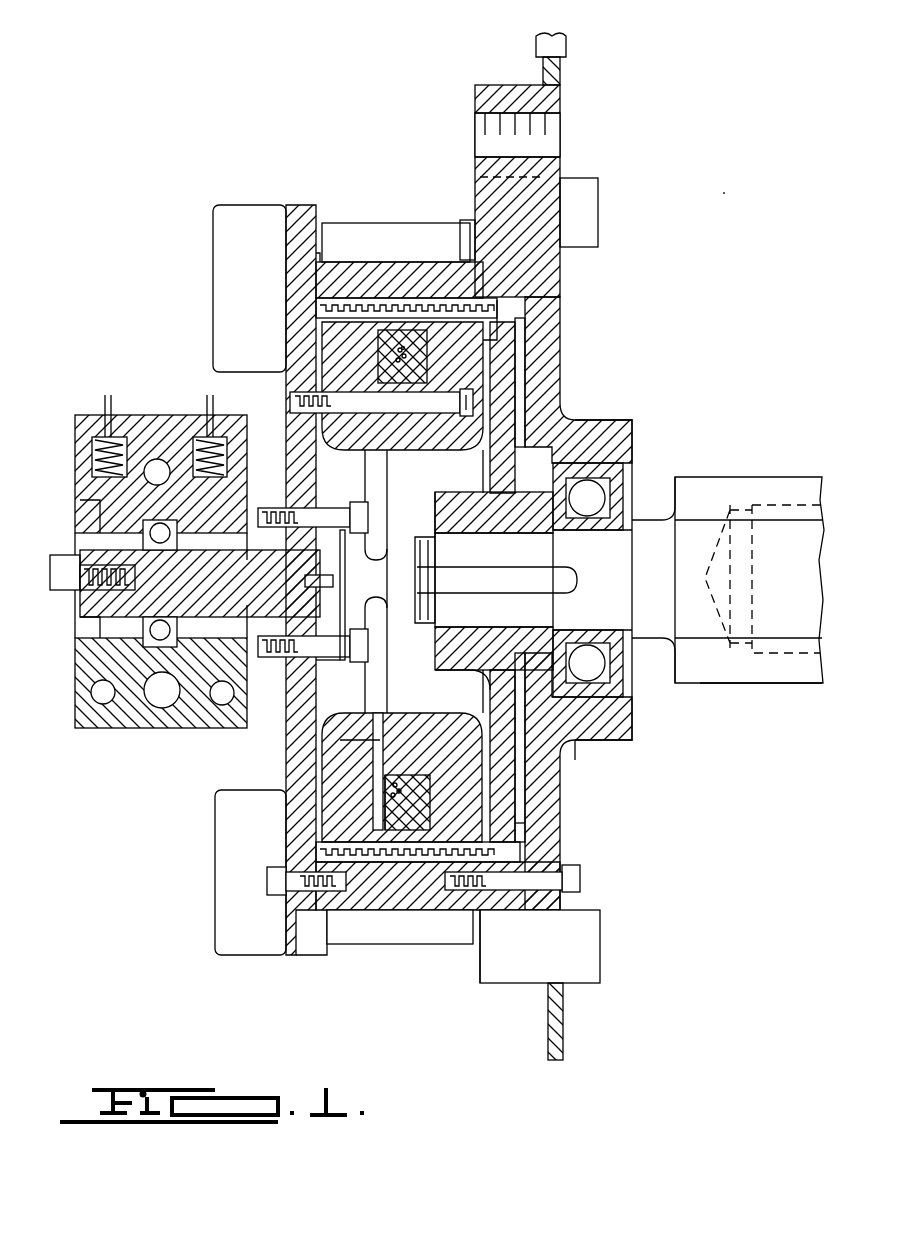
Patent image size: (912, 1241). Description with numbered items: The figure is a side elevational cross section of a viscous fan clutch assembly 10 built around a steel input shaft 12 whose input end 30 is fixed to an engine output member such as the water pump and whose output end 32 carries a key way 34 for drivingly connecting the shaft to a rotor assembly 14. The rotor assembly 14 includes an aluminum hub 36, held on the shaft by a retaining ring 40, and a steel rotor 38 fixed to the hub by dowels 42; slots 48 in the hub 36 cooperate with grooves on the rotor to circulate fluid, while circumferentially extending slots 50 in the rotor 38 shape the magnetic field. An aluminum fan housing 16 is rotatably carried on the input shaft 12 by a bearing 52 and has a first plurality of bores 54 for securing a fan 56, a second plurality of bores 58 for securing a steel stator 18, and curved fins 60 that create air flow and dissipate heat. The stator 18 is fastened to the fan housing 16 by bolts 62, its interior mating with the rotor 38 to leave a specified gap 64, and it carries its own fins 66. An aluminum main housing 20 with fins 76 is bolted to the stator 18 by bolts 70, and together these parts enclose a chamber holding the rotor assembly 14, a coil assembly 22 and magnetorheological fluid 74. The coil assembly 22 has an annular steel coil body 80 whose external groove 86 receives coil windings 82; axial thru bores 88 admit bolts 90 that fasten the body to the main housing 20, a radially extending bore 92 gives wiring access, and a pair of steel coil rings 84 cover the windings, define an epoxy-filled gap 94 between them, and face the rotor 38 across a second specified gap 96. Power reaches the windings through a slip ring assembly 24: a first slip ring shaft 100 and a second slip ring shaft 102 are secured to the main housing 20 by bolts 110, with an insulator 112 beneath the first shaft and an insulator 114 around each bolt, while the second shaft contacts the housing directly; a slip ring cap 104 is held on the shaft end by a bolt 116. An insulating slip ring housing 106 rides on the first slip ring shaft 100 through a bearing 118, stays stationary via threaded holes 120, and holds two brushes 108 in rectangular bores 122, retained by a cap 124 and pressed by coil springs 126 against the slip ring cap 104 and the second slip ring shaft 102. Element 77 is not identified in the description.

The viscous fan clutch assembly 10 is at (725, 192).
The input shaft 12 is at (765, 465).
The rotor assembly 14 is at (538, 470).
The fan housing 16 is at (555, 786).
The stator 18 is at (334, 914).
The main housing 20 is at (297, 287).
The coil assembly 22 is at (458, 698).
The slip ring assembly 24 is at (146, 358).
The input end 30 is at (790, 684).
The output end 32 is at (507, 562).
The key way 34 is at (470, 578).
The hub 36 is at (528, 368).
The rotor 38 is at (410, 900).
The retaining ring 40 is at (425, 512).
The dowels 42 is at (505, 320).
The slots 48 is at (520, 826).
The circumferentially extending slots 50 is at (383, 694).
The bearing 52 is at (592, 492).
The first plurality of bores 54 is at (530, 130).
The fan 56 is at (565, 42).
The second plurality of bores 58 is at (520, 885).
The fins 60 is at (592, 925).
The bolts 62 is at (582, 878).
The gap 64 is at (338, 300).
The fins 66 is at (442, 945).
The bolts 70 is at (265, 879).
The magnetorheological fluid 74 is at (515, 302).
The fins 76 is at (245, 900).
The rotor wall 77 is at (355, 700).
The coil body 80 is at (575, 742).
The coil windings 82 is at (408, 790).
The coil rings 84 is at (503, 365).
The external groove 86 is at (376, 356).
The axial thru bores 88 is at (350, 403).
The bolts 90 is at (468, 402).
The radially extending bore 92 is at (380, 745).
The gap 94 is at (430, 826).
The second specified gap 96 is at (398, 300).
The first slip ring shaft 100 is at (268, 596).
The second slip ring shaft 102 is at (215, 725).
The slip ring cap 104 is at (85, 640).
The slip ring housing 106 is at (108, 728).
The brushes 108 is at (258, 448).
The bolts 110 is at (346, 506).
The insulator 112 is at (344, 558).
The insulator 114 is at (322, 580).
The bolt 116 is at (62, 562).
The bearing 118 is at (162, 628).
The threaded holes 120 is at (78, 710).
The rectangular bores 122 is at (80, 512).
The cap 124 is at (88, 415).
The coil springs 126 is at (188, 415).